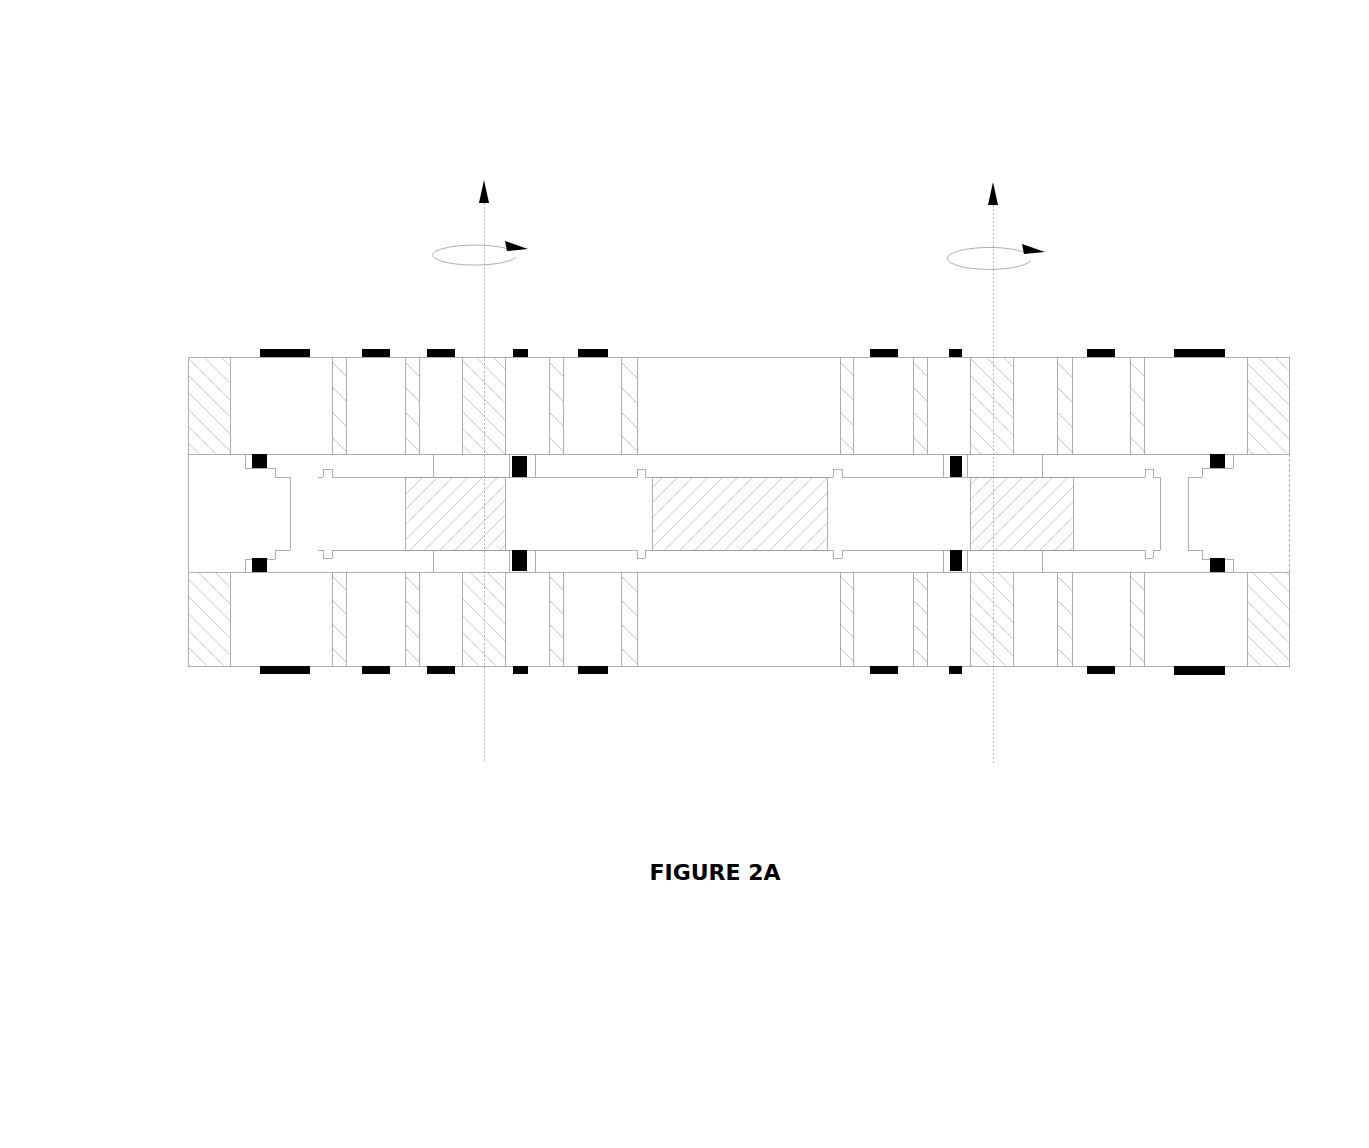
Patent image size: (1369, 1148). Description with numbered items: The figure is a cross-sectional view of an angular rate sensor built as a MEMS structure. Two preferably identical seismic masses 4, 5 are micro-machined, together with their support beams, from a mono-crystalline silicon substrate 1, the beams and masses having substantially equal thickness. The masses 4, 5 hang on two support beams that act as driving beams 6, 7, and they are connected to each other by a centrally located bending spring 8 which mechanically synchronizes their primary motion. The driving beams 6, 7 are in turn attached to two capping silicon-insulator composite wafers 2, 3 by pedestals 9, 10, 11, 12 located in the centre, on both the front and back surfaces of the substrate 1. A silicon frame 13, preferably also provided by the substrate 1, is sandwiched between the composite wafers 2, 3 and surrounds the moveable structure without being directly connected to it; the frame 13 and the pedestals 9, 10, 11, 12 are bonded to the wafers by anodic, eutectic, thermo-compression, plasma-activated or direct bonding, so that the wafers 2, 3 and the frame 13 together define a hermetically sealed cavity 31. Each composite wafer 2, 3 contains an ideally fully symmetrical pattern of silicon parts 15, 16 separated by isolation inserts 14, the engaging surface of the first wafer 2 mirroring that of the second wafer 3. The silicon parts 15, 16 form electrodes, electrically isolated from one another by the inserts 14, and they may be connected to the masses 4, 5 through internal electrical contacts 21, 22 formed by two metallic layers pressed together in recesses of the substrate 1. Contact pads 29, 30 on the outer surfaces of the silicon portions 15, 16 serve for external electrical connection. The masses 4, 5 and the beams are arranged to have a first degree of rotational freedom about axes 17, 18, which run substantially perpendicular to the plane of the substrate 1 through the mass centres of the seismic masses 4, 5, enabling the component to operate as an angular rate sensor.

The mono-crystalline silicon substrate 1 is at (158, 518).
The first composite wafer 2 is at (158, 390).
The second composite wafer 3 is at (158, 612).
The seismic mass 4 is at (373, 490).
The seismic mass 5 is at (897, 493).
The driving beam 6 is at (420, 512).
The driving beam 7 is at (1052, 522).
The bending spring 8 is at (702, 493).
The pedestal 9 is at (447, 468).
The pedestal 10 is at (1020, 467).
The pedestal 11 is at (447, 565).
The pedestal 12 is at (1020, 572).
The silicon frame 13 is at (1283, 523).
The isolation insert 14 is at (557, 650).
The silicon part 15 is at (658, 375).
The silicon part 16 is at (753, 648).
The axis 17 is at (482, 224).
The axis 18 is at (990, 227).
The internal electrical contact 21 is at (258, 452).
The internal electrical contact 22 is at (258, 574).
The contact pad 29 is at (287, 349).
The contact pad 30 is at (882, 677).
The hermetically sealed cavity 31 is at (1175, 517).